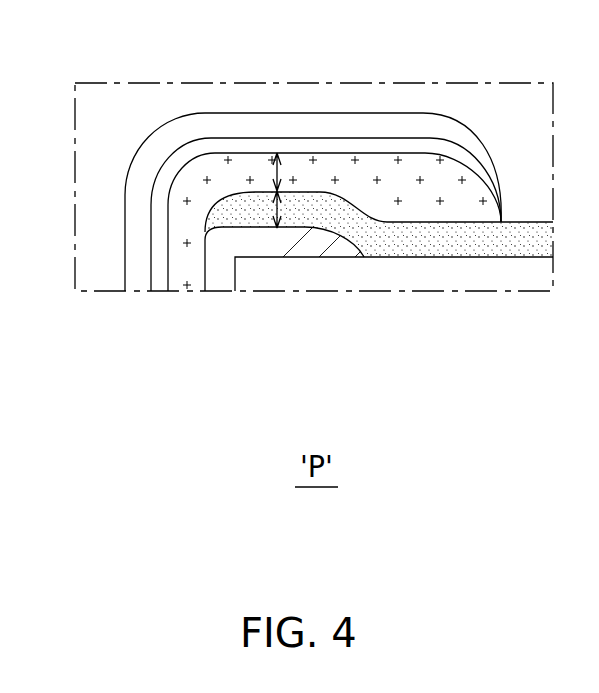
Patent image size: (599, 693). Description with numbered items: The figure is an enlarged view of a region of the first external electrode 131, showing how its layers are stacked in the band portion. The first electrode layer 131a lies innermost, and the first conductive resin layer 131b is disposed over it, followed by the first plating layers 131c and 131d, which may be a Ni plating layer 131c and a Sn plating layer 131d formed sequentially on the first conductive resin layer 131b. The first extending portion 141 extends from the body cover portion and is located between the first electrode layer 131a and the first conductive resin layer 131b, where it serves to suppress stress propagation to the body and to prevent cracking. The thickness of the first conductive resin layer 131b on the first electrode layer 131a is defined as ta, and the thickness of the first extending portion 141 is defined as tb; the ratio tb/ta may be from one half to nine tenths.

The first external electrode 131 is at (318, 259).
The first electrode layer 131a is at (402, 284).
The first conductive resin layer 131b is at (187, 290).
The first plating layer 131c is at (158, 287).
The first plating layer 131d is at (138, 285).
The first extending portion 141 is at (323, 212).
The thickness of the first conductive resin layer ta is at (273, 168).
The thickness of the first extending portion tb is at (273, 206).